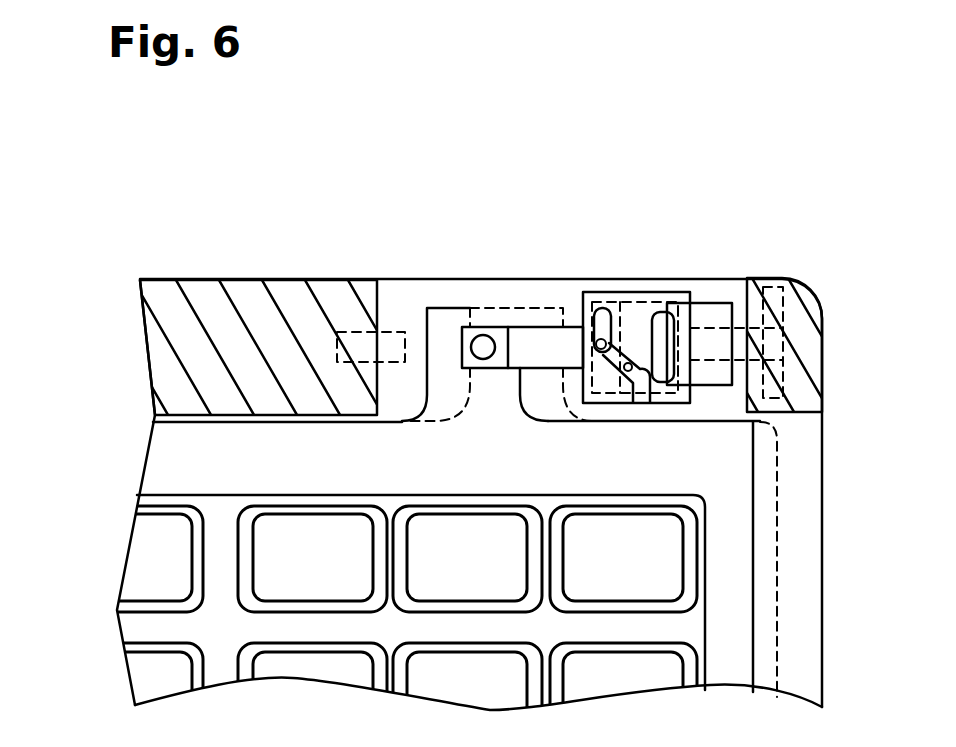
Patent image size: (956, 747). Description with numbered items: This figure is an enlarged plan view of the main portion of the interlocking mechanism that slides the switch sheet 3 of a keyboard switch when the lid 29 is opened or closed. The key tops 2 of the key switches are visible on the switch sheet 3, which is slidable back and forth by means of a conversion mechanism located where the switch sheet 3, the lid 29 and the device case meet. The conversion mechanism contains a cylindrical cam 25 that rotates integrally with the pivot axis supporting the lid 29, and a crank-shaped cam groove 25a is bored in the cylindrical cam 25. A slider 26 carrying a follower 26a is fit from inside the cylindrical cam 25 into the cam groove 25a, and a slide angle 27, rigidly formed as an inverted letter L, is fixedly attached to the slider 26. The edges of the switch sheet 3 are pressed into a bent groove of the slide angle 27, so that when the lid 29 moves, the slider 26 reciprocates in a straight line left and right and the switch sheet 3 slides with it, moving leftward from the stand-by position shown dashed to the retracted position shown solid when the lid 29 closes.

The key top 2 is at (267, 667).
The switch sheet 3 is at (668, 632).
The cylindrical cam 25 is at (640, 317).
The cam groove 25a is at (628, 367).
The slider 26 is at (543, 348).
The follower 26a is at (600, 305).
The slide angle 27 is at (175, 460).
The lid 29 is at (248, 333).